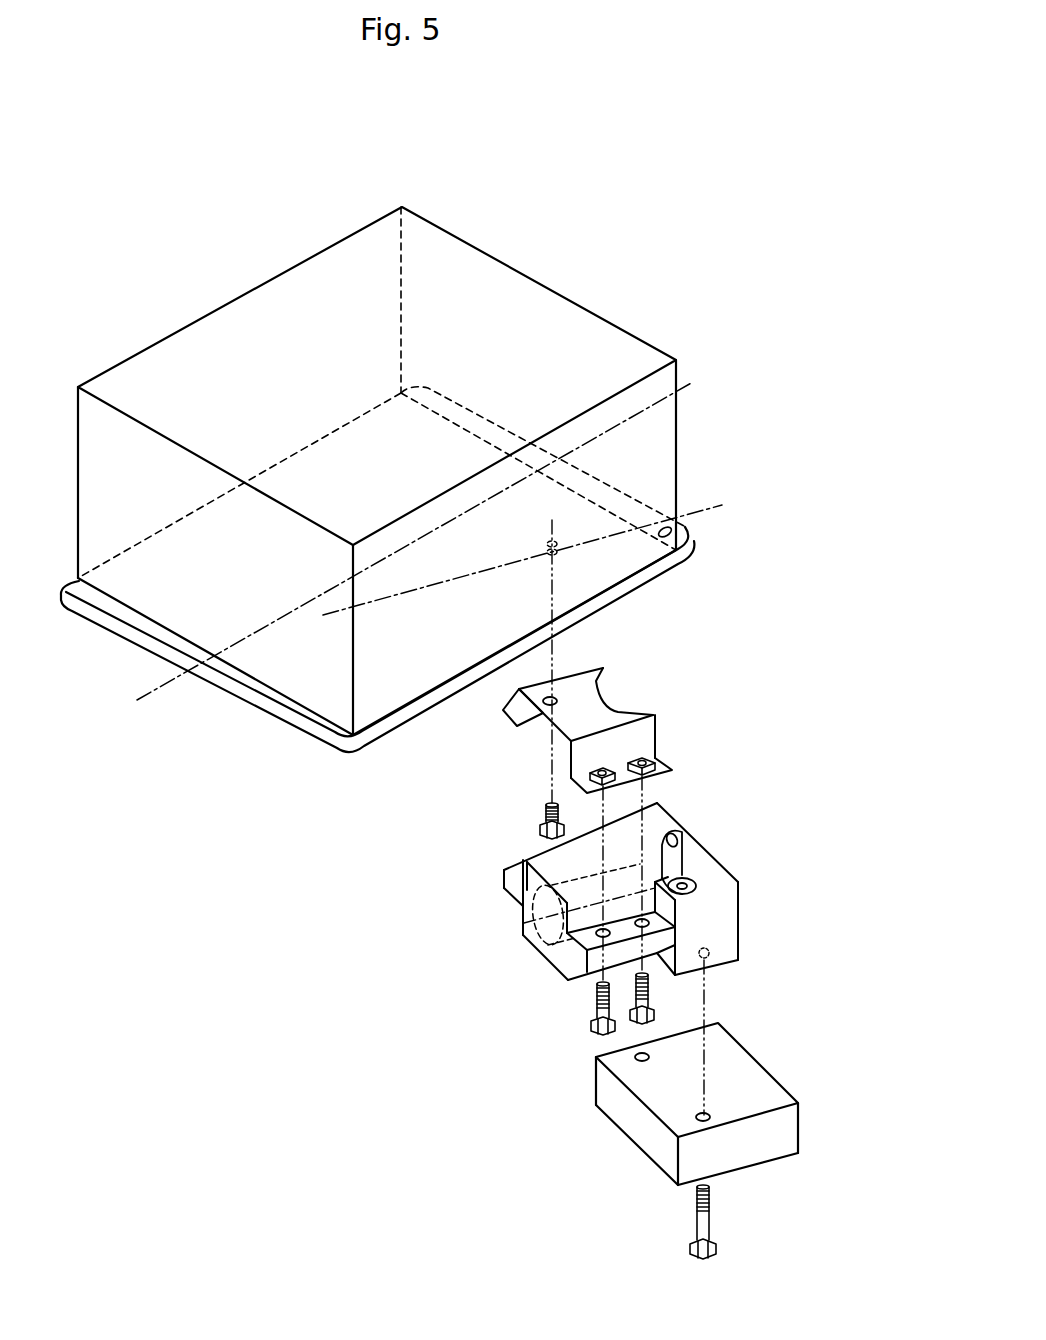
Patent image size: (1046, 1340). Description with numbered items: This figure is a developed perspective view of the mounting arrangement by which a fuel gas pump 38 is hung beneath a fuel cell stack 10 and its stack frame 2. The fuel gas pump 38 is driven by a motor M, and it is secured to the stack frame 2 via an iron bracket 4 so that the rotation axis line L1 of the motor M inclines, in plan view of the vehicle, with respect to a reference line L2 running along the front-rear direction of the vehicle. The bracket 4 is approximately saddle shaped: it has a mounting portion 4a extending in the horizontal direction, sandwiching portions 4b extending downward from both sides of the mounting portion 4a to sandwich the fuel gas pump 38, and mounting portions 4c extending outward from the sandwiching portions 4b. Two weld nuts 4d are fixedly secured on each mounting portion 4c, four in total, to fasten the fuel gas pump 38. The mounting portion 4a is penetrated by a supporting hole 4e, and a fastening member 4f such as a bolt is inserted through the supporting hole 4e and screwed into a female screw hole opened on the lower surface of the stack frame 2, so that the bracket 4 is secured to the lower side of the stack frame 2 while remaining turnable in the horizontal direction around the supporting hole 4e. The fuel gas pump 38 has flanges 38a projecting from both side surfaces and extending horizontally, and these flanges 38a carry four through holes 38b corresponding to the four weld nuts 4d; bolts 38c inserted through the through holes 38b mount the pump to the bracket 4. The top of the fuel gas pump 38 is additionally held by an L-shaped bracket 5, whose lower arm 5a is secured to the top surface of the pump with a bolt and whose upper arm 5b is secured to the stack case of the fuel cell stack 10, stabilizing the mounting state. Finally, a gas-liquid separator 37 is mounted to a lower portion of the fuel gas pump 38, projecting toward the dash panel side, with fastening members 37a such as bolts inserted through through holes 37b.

The fuel cell stack 10 is at (222, 320).
The stack frame 2 is at (118, 612).
The reference line L2 is at (150, 698).
The bracket 4 is at (604, 717).
The mounting portion 4a is at (612, 707).
The sandwiching portions 4b is at (647, 737).
The mounting portions 4c is at (590, 778).
The weld nuts 4d is at (663, 768).
The supporting hole 4e is at (553, 696).
The fastening member 4f is at (540, 823).
The L-shaped bracket 5 is at (770, 875).
The lower arm 5a is at (744, 905).
The upper arm 5b is at (686, 860).
The fuel gas pump 38 is at (621, 950).
The flanges 38a is at (500, 878).
The through holes 38b is at (598, 936).
The bolts 38c is at (590, 1036).
The rotation axis line L1 is at (520, 926).
The motor M is at (522, 945).
The gas-liquid separator 37 is at (628, 1147).
The fastening members 37a is at (695, 1217).
The through holes 37b is at (713, 1117).